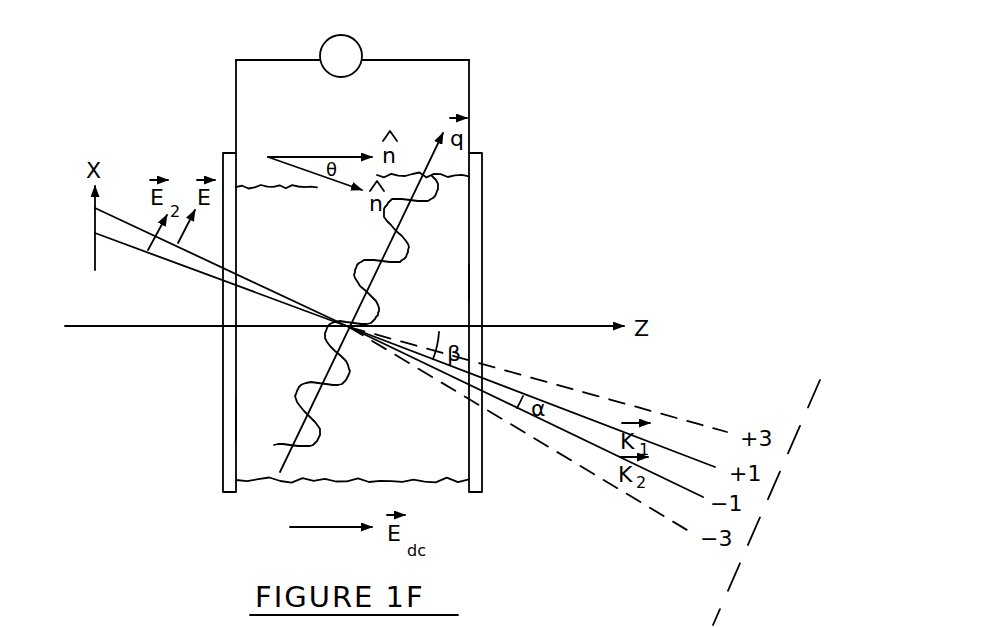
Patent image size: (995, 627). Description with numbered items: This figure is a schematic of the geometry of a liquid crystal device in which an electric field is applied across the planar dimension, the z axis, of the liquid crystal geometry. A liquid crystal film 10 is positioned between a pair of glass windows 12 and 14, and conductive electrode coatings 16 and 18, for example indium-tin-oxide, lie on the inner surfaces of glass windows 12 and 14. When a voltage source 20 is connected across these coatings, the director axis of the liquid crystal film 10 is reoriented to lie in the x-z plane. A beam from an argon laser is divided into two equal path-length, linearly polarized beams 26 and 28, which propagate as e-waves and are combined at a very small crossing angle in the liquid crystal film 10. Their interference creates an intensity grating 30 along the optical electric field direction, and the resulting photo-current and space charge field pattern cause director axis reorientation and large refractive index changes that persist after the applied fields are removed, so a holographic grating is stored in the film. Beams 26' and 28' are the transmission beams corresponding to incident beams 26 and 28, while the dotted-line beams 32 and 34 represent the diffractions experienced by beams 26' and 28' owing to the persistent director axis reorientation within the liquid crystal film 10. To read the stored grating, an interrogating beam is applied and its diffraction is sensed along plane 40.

The liquid crystal film 10 is at (407, 438).
The glass window 12 is at (230, 365).
The glass window 14 is at (476, 246).
The conductive electrode coating 16 is at (240, 432).
The conductive electrode coating 18 is at (470, 292).
The voltage source 20 is at (356, 41).
The linearly polarized laser beam 26 is at (222, 218).
The linearly polarized laser beam 28 is at (222, 280).
The intensity grating 30 is at (327, 357).
The diffracted beam 32 is at (616, 400).
The diffracted beam 34 is at (593, 473).
The transmission beam 26' is at (526, 456).
The transmission beam 28' is at (552, 397).
The plane 40 is at (768, 489).